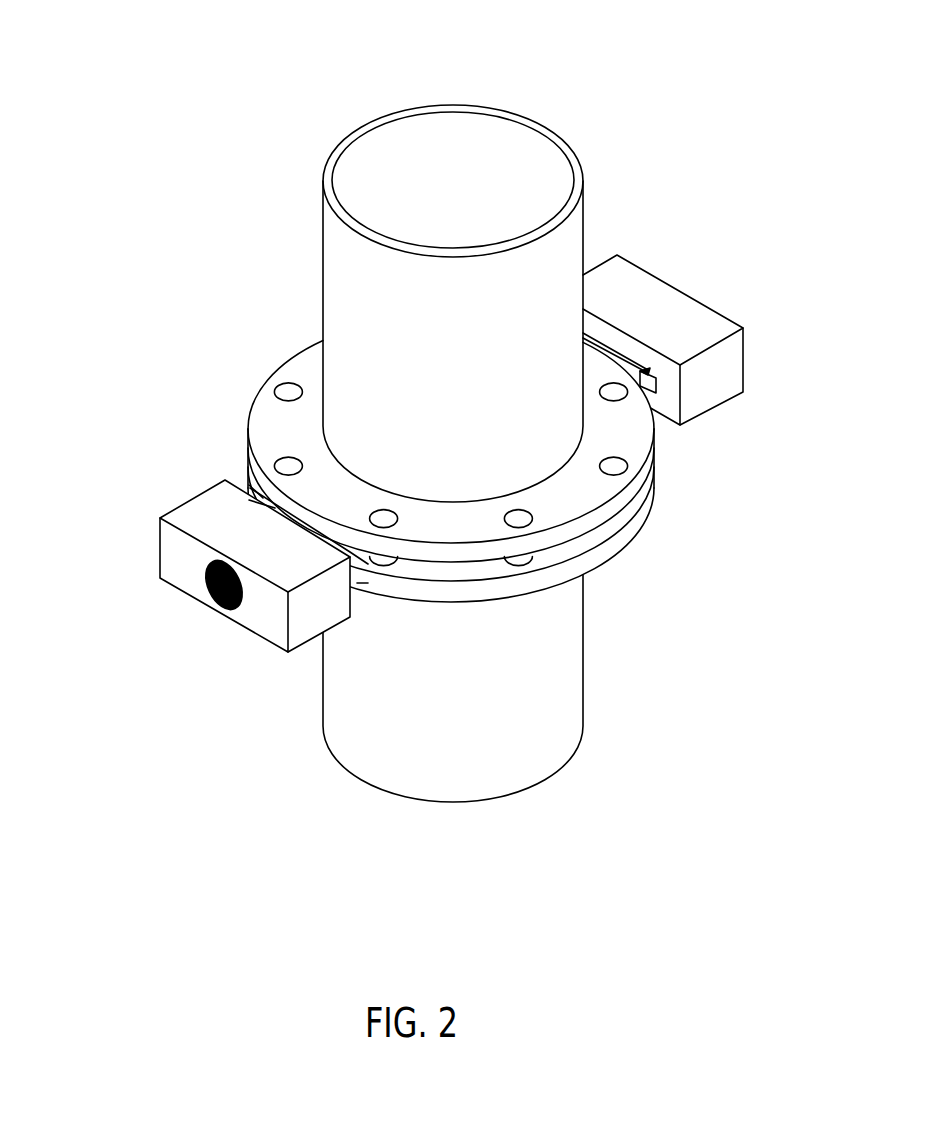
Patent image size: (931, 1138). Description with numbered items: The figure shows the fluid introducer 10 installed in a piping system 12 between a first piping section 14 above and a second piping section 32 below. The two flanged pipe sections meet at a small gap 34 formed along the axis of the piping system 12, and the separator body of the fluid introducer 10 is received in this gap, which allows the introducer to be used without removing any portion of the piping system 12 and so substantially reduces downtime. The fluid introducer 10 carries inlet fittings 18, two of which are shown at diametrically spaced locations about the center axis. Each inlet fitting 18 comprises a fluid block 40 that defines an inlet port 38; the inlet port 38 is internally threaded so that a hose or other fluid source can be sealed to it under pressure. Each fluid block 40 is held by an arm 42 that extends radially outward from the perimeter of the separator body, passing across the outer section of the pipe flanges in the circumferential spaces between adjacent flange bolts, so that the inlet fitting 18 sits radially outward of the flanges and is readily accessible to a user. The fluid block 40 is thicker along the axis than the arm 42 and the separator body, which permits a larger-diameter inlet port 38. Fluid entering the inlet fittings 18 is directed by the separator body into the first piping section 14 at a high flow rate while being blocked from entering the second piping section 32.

The fluid introducer 10 is at (671, 196).
The piping system 12 is at (597, 118).
The first piping section 14 is at (388, 338).
The inlet fitting 18 is at (212, 603).
The second piping section 32 is at (540, 627).
The small gap 34 is at (557, 493).
The inlet port 38 is at (207, 583).
The fluid block 40 is at (230, 525).
The arm 42 is at (358, 560).